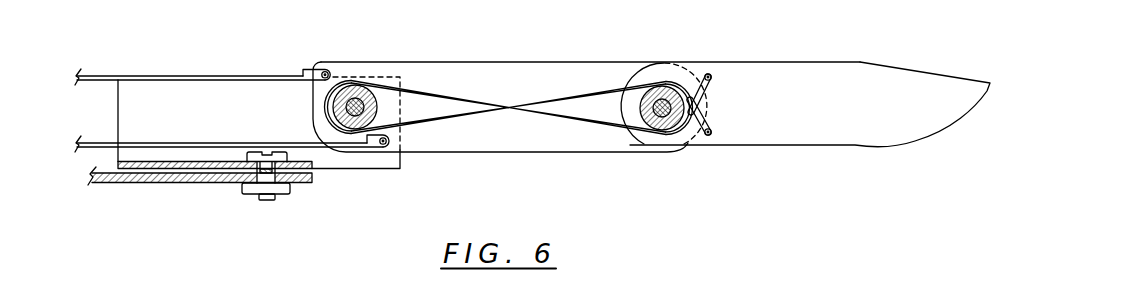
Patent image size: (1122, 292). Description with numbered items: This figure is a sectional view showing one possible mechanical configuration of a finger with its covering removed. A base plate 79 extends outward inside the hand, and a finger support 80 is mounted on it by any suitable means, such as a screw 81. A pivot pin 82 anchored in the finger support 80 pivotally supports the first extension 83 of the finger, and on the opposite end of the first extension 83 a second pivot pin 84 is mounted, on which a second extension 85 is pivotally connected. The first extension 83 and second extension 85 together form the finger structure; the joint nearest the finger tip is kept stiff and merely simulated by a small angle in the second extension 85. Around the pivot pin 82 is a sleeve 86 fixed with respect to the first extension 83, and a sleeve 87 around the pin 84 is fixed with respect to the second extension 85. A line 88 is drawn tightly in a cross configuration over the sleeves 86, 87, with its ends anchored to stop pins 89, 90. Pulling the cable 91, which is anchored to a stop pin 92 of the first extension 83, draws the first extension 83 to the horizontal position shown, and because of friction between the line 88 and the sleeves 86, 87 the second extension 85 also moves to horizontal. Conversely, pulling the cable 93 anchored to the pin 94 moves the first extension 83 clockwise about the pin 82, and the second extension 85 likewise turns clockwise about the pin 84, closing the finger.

The base plate 79 is at (165, 183).
The finger support 80 is at (347, 170).
The screw 81 is at (268, 201).
The pivot pin 82 is at (381, 107).
The first extension 83 is at (497, 62).
The second pivot pin 84 is at (666, 92).
The second extension 85 is at (846, 62).
The sleeve 86 is at (332, 107).
The sleeve 87 is at (640, 107).
The line 88 is at (535, 101).
The stop pin 89 is at (709, 73).
The stop pin 90 is at (709, 136).
The cable 91 is at (105, 75).
The stop pin 92 is at (324, 70).
The cable 93 is at (94, 142).
The pin 94 is at (392, 147).